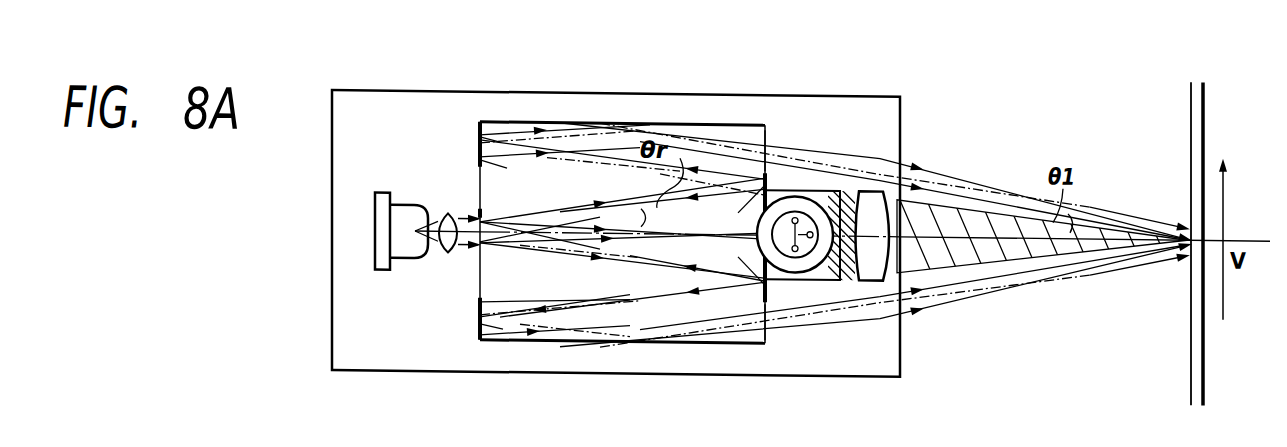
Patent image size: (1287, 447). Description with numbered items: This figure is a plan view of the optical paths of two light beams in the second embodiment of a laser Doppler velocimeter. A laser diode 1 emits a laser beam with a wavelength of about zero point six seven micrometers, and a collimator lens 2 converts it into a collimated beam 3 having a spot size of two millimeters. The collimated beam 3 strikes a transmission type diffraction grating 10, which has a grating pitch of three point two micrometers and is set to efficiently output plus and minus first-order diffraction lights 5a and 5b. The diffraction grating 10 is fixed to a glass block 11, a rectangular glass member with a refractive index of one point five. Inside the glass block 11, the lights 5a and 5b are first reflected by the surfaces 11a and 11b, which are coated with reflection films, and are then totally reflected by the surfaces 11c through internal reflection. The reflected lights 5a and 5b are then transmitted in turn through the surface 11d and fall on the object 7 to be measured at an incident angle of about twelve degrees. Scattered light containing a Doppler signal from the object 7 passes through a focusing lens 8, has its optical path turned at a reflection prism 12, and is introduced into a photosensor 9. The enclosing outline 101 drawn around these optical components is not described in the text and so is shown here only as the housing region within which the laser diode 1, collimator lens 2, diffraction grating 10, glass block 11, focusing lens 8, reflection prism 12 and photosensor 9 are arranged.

The laser diode 1 is at (408, 247).
The collimator lens 2 is at (448, 239).
The collimated beam 3 is at (473, 245).
The first-order diffraction light 5a is at (622, 267).
The first-order diffraction light 5b is at (622, 200).
The object to be measured 7 is at (1193, 353).
The focusing lens 8 is at (870, 196).
The photosensor 9 is at (802, 185).
The transmission type diffraction grating 10 is at (479, 207).
The glass block 11 is at (623, 320).
The reflection-film-coated surface 11a is at (766, 178).
The reflection-film-coated surface 11b is at (477, 135).
The total reflection surfaces 11c is at (567, 122).
The transmission surface 11d is at (762, 135).
The reflection prism 12 is at (822, 274).
The casing 101 is at (420, 106).